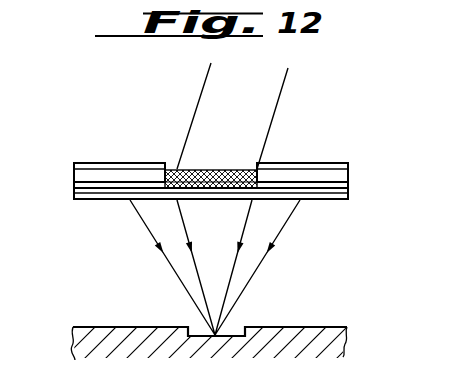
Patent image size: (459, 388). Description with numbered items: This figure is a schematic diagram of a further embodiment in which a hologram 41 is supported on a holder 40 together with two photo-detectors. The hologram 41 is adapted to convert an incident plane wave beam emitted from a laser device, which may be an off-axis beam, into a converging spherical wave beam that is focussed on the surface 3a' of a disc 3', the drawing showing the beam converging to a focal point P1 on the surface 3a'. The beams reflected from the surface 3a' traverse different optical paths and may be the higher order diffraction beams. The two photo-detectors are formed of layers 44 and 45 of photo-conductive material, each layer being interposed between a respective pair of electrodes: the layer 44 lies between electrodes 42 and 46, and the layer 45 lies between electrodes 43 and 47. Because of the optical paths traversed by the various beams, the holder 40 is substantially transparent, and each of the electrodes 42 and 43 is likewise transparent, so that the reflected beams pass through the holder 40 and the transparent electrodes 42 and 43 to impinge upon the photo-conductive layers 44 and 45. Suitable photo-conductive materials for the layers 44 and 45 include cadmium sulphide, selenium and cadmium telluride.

The holder 40 is at (338, 200).
The hologram 41 is at (225, 168).
The electrode 42 is at (73, 190).
The electrode 43 is at (349, 188).
The photo-conductive layer 44 is at (73, 172).
The photo-conductive layer 45 is at (349, 176).
The electrode 46 is at (122, 163).
The electrode 47 is at (321, 163).
The disc 3' is at (235, 353).
The surface of disc 3a' is at (296, 304).
The convergence point P1 is at (197, 328).